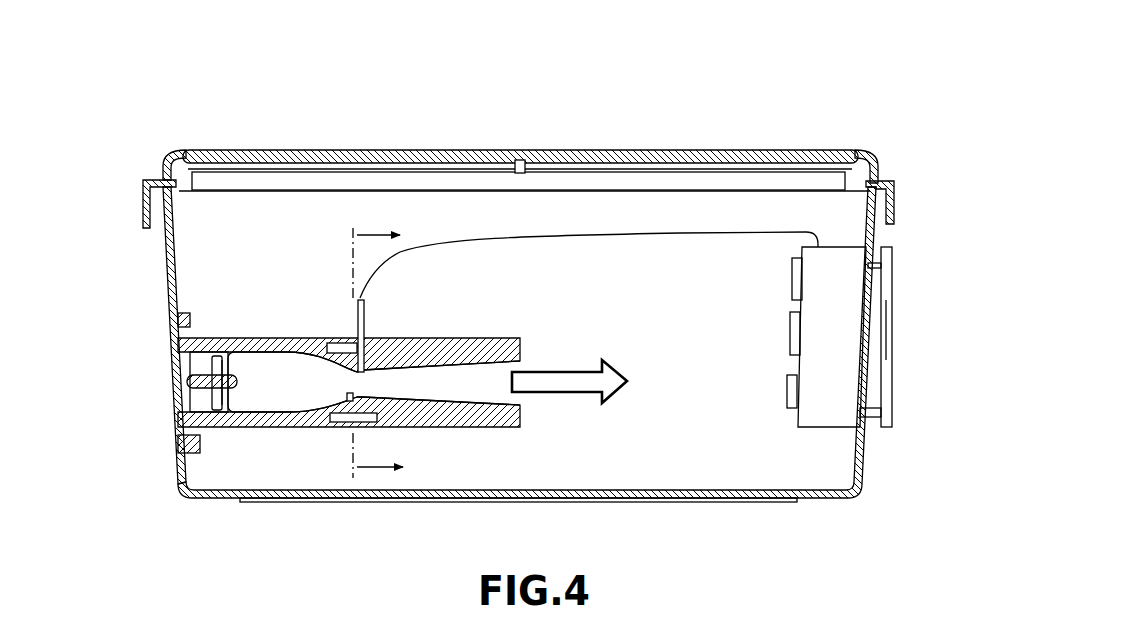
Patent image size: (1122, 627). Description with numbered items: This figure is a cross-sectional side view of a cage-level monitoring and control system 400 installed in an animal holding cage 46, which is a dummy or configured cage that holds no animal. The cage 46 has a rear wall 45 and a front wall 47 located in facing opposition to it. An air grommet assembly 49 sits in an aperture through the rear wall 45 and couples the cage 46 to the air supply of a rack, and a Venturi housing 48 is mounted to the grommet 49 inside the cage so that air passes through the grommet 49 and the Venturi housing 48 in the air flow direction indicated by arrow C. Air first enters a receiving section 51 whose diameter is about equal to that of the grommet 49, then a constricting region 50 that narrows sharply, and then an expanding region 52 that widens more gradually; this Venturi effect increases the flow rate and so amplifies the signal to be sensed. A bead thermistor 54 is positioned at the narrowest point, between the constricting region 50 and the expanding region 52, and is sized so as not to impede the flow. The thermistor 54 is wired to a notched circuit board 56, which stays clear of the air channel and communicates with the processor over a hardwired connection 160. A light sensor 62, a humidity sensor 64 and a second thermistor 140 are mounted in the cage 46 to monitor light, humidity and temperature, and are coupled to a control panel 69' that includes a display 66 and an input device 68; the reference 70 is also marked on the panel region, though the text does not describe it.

The cage-level monitoring and control system 400 is at (203, 70).
The animal holding cage 46 is at (150, 176).
The rear wall 45 is at (166, 252).
The front wall 47 is at (868, 462).
The Venturi housing 48 is at (478, 338).
The air grommet assembly 49 is at (178, 366).
The receiving section 51 is at (281, 379).
The constricting region 50 is at (357, 375).
The expanding region 52 is at (481, 392).
The thermistor 54 is at (312, 423).
The circuit board 56 is at (365, 322).
The hardwired connection 160 is at (430, 240).
The light sensor 62 is at (795, 276).
The humidity sensor 64 is at (793, 326).
The second thermistor 140 is at (790, 386).
The control panel 69' is at (929, 319).
The display 66 is at (893, 290).
The input device 68 is at (895, 333).
The rail tab 70 is at (893, 380).
The air flow direction C is at (566, 372).